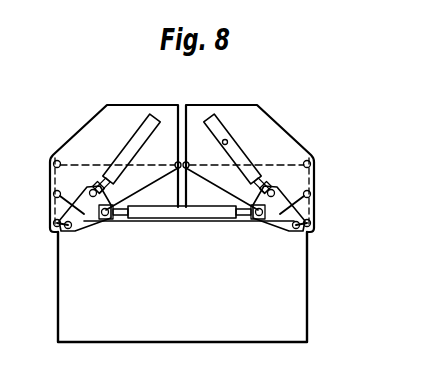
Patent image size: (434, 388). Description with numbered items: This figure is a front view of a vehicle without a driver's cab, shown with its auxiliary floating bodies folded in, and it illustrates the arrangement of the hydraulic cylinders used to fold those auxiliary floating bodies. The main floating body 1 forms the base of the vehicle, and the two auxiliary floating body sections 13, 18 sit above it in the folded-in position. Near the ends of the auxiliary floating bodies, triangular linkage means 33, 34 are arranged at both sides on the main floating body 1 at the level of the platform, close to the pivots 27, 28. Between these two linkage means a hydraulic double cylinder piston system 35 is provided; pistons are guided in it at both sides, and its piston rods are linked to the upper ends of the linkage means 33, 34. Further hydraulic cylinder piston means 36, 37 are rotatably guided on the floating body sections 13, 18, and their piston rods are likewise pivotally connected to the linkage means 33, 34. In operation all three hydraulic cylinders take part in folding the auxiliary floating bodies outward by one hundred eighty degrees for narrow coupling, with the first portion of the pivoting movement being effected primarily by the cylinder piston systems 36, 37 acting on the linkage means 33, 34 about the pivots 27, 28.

The main floating body 1 is at (304, 301).
The floating body section 13 is at (284, 134).
The floating body section 18 is at (117, 104).
The pivot 27 is at (313, 228).
The pivot 28 is at (58, 227).
The triangular linkage means 33 is at (272, 208).
The triangular linkage means 34 is at (87, 221).
The hydraulic double cylinder piston system 35 is at (197, 211).
The hydraulic cylinder piston means 36 is at (237, 154).
The hydraulic cylinder piston means 37 is at (128, 149).